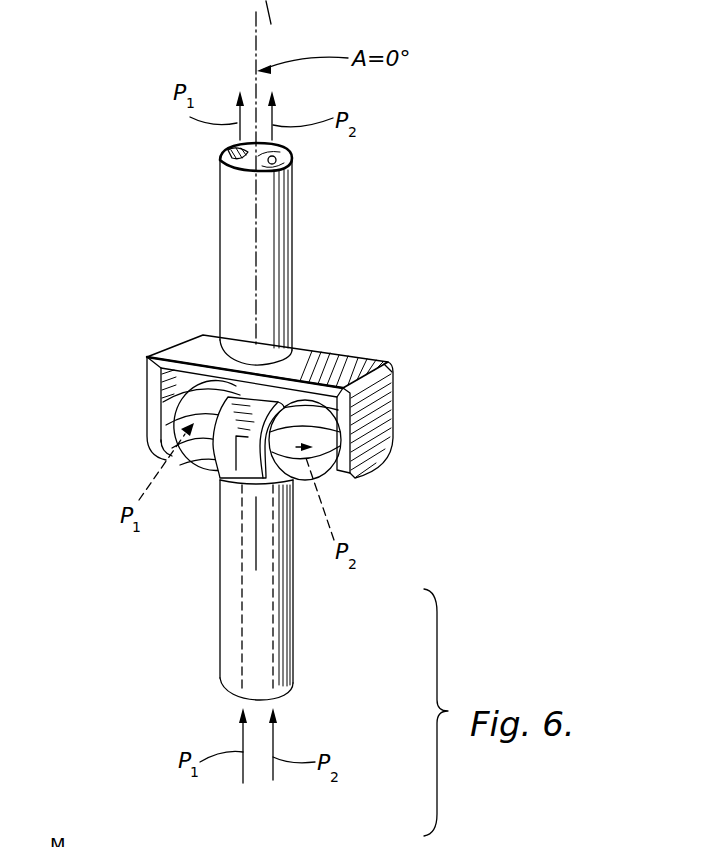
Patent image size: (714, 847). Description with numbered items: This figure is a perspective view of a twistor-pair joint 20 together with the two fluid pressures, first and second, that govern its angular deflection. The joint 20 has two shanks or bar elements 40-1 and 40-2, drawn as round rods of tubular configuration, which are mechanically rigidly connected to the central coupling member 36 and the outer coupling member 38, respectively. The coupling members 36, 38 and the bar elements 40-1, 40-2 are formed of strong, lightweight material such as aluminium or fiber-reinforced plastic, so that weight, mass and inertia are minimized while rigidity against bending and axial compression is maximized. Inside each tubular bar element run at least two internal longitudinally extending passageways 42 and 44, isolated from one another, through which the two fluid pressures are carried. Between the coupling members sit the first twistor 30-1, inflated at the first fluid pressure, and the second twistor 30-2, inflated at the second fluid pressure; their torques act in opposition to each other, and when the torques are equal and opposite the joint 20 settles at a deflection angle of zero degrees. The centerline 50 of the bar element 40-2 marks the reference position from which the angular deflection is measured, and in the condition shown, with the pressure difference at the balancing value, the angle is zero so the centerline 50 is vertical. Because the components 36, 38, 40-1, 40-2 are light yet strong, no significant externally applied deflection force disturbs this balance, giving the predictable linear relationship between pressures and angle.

The centerline 50 is at (253, 38).
The twistor-pair joint 20 is at (113, 373).
The outer coupling member 38 is at (365, 345).
The first twistor 30-1 is at (176, 411).
The second twistor 30-2 is at (333, 485).
The central coupling member 36 is at (214, 479).
The bar element 40-1 is at (303, 653).
The bar element 40-2 is at (298, 255).
The internal longitudinally extending passageway 42 is at (237, 150).
The internal longitudinally extending passageway 44 is at (290, 152).